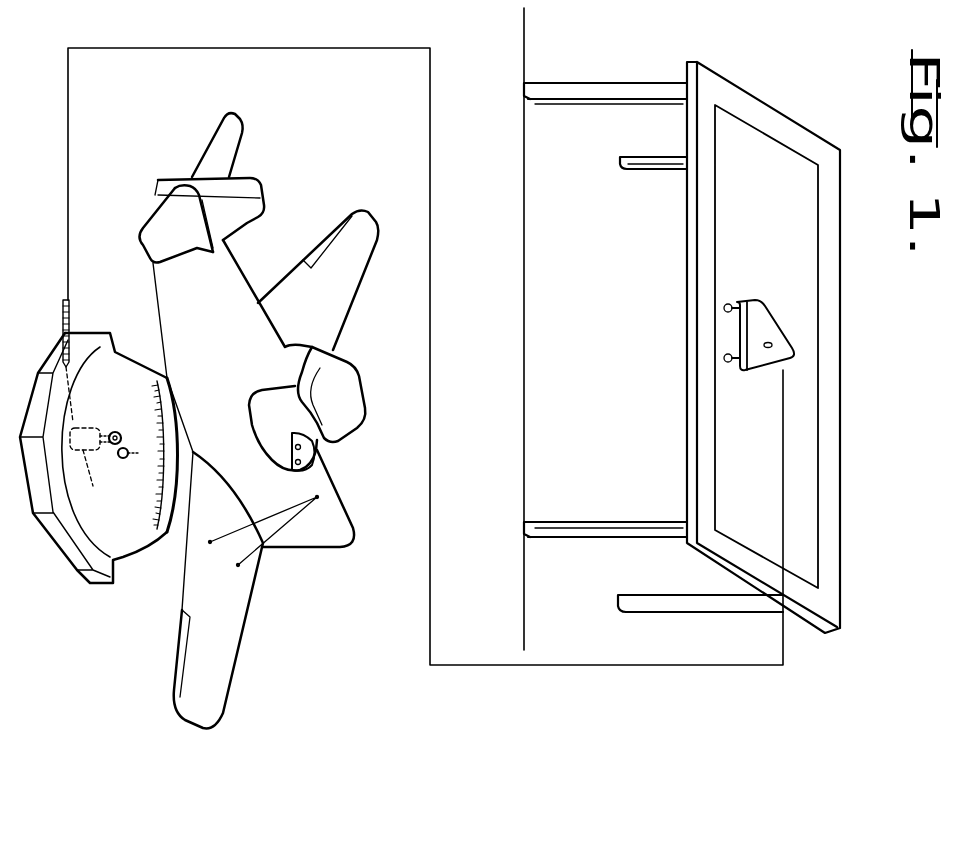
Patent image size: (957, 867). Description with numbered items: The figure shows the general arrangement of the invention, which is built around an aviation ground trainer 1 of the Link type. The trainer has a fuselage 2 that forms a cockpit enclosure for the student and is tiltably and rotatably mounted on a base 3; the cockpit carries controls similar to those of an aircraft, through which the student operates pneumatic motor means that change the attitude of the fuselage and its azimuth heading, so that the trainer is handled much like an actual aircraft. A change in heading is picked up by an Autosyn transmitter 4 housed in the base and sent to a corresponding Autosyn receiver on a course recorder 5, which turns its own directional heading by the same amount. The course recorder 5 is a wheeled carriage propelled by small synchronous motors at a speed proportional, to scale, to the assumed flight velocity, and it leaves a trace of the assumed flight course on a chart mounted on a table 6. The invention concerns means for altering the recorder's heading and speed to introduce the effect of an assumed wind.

The aviation ground trainer 1 is at (199, 420).
The fuselage 2 is at (343, 547).
The base 3 is at (110, 583).
The Autosyn transmitter 4 is at (93, 487).
The course recorder 5 is at (792, 356).
The table 6 is at (687, 303).